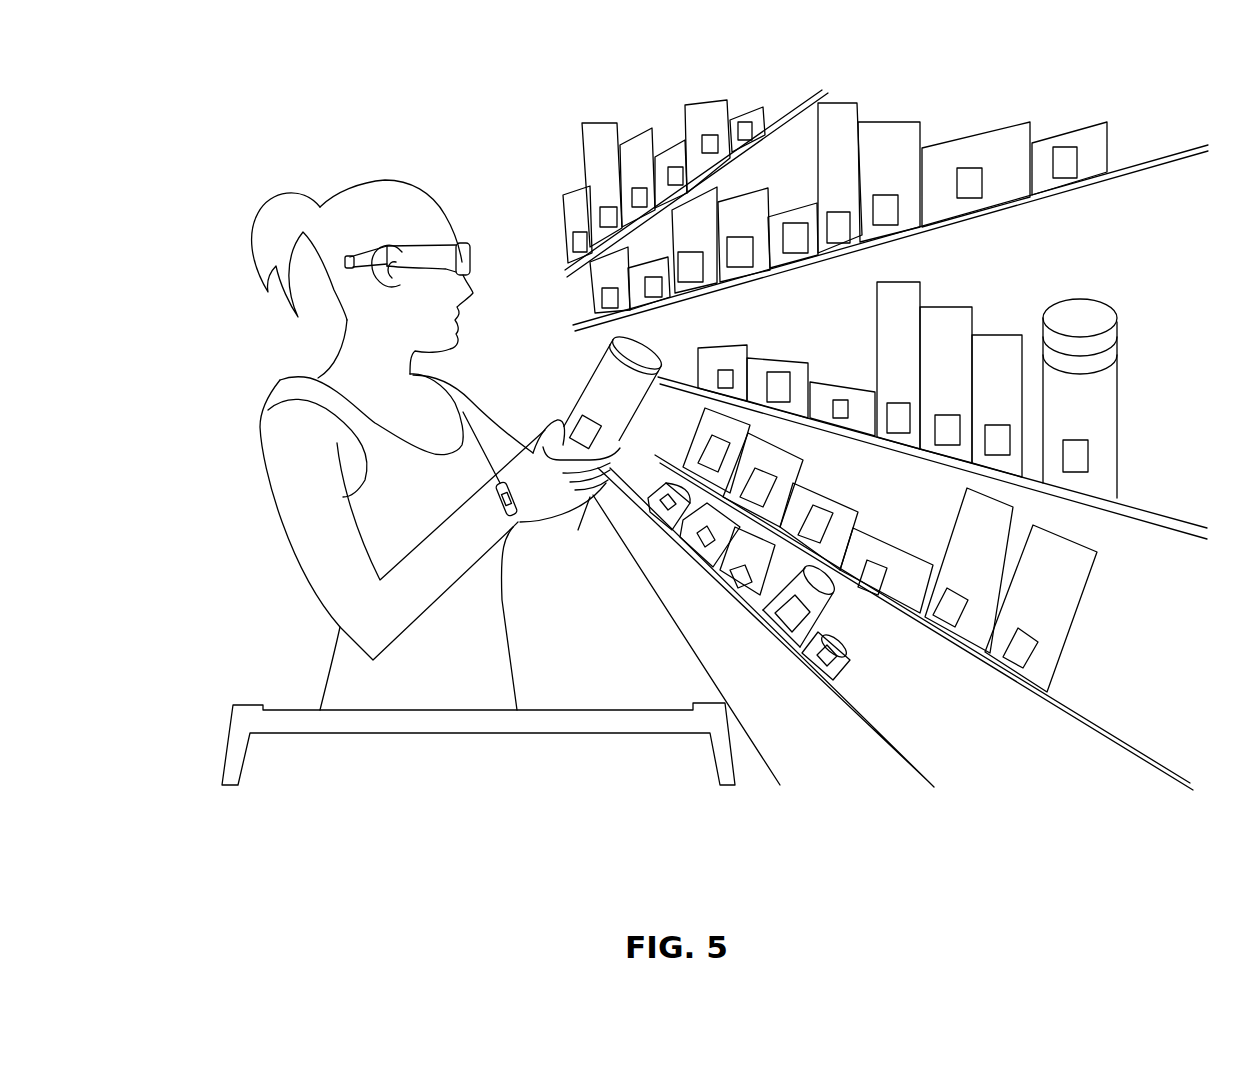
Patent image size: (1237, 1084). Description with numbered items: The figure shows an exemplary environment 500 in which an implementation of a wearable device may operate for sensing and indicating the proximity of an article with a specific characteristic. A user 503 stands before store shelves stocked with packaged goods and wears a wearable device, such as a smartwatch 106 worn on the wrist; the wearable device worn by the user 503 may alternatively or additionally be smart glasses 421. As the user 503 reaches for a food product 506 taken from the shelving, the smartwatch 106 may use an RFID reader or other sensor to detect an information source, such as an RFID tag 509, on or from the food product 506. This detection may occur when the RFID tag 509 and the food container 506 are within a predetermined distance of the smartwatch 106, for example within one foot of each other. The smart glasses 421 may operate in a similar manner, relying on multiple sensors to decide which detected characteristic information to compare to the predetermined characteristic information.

The exemplary environment 500 is at (494, 130).
The user 503 is at (270, 398).
The smart glasses 421 is at (468, 272).
The smartwatch 106 is at (519, 525).
The food product 506 is at (650, 355).
The RFID tag 509 is at (613, 452).